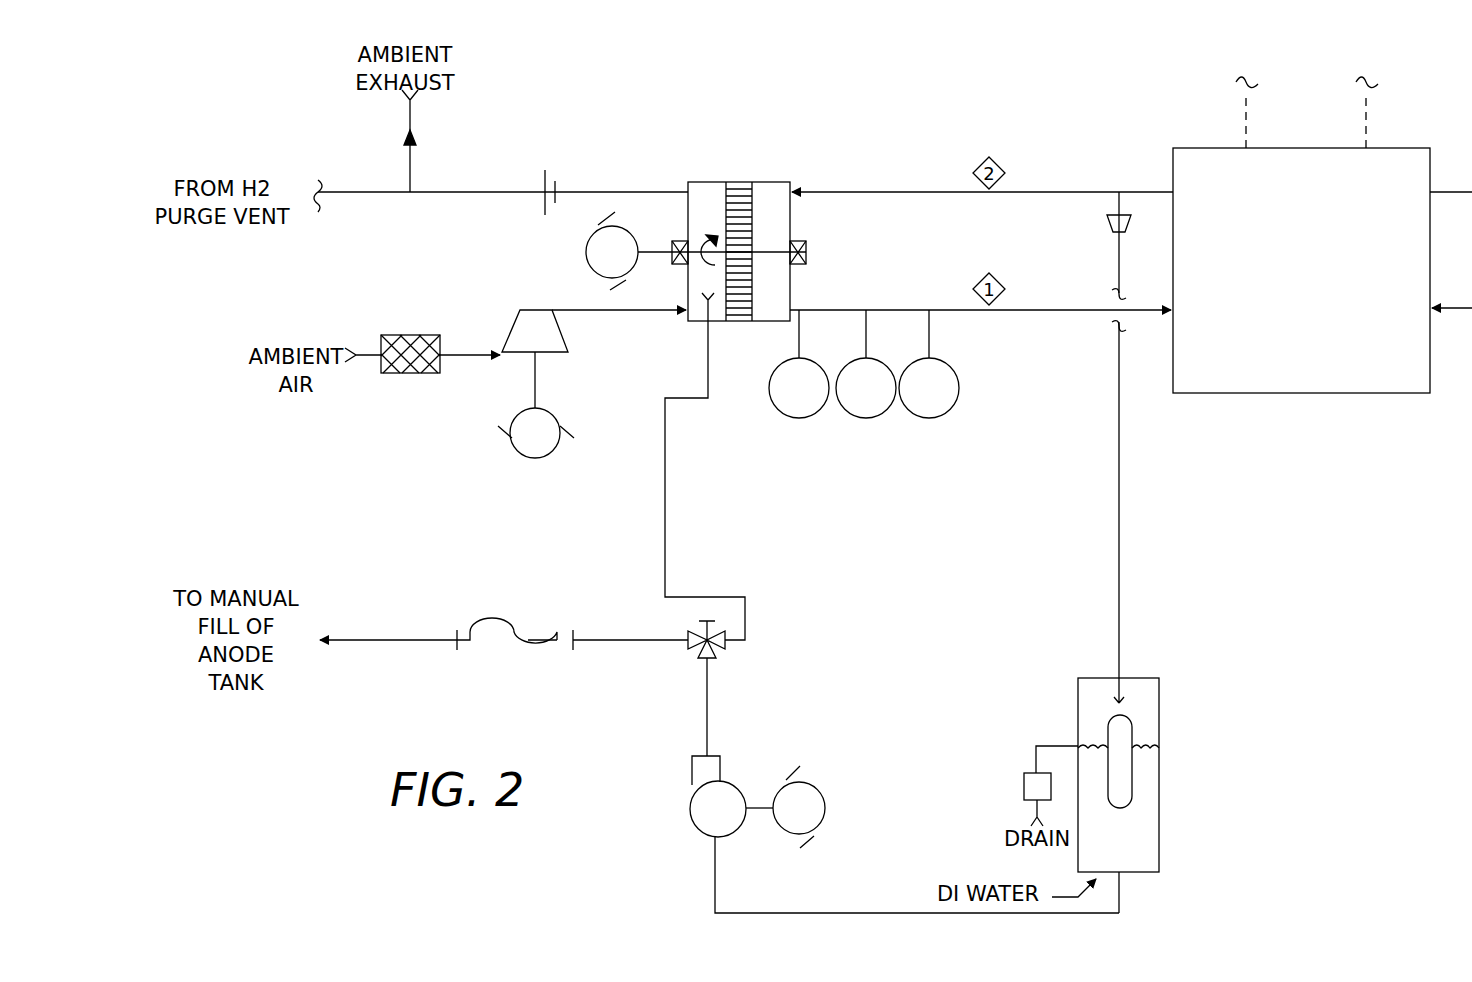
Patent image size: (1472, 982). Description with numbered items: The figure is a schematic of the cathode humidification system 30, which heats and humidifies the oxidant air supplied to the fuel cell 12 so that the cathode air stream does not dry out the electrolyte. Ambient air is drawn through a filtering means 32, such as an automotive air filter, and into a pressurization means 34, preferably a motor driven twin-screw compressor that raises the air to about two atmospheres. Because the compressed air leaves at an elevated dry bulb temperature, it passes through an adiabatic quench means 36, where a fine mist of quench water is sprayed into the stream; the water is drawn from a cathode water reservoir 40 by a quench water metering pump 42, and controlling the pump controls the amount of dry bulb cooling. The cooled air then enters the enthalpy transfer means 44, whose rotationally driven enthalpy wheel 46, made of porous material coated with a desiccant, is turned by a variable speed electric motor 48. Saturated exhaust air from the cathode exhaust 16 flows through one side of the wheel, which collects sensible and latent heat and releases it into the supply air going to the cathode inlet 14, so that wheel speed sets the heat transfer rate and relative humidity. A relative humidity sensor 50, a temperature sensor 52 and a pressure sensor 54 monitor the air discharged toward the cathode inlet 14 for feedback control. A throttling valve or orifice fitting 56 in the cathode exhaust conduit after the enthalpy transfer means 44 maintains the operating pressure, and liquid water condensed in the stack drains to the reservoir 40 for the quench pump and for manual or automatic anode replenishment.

The fuel cell 12 is at (1406, 150).
The cathode inlet 14 is at (1168, 312).
The cathode exhaust 16 is at (1155, 188).
The cathode humidification system 30 is at (1004, 60).
The filtering means 32 is at (394, 335).
The pressurization means 34 is at (504, 330).
The adiabatic quench means 36 is at (696, 320).
The cathode water reservoir 40 is at (1158, 874).
The quench water metering pump 42 is at (700, 830).
The enthalpy transfer means 44 is at (733, 205).
The enthalpy wheel 46 is at (752, 292).
The variable speed electric motor 48 is at (586, 247).
The relative humidity sensor 50 is at (812, 416).
The temperature sensor 52 is at (876, 416).
The pressure sensor 54 is at (959, 382).
The throttling valve or orifice fitting 56 is at (542, 183).